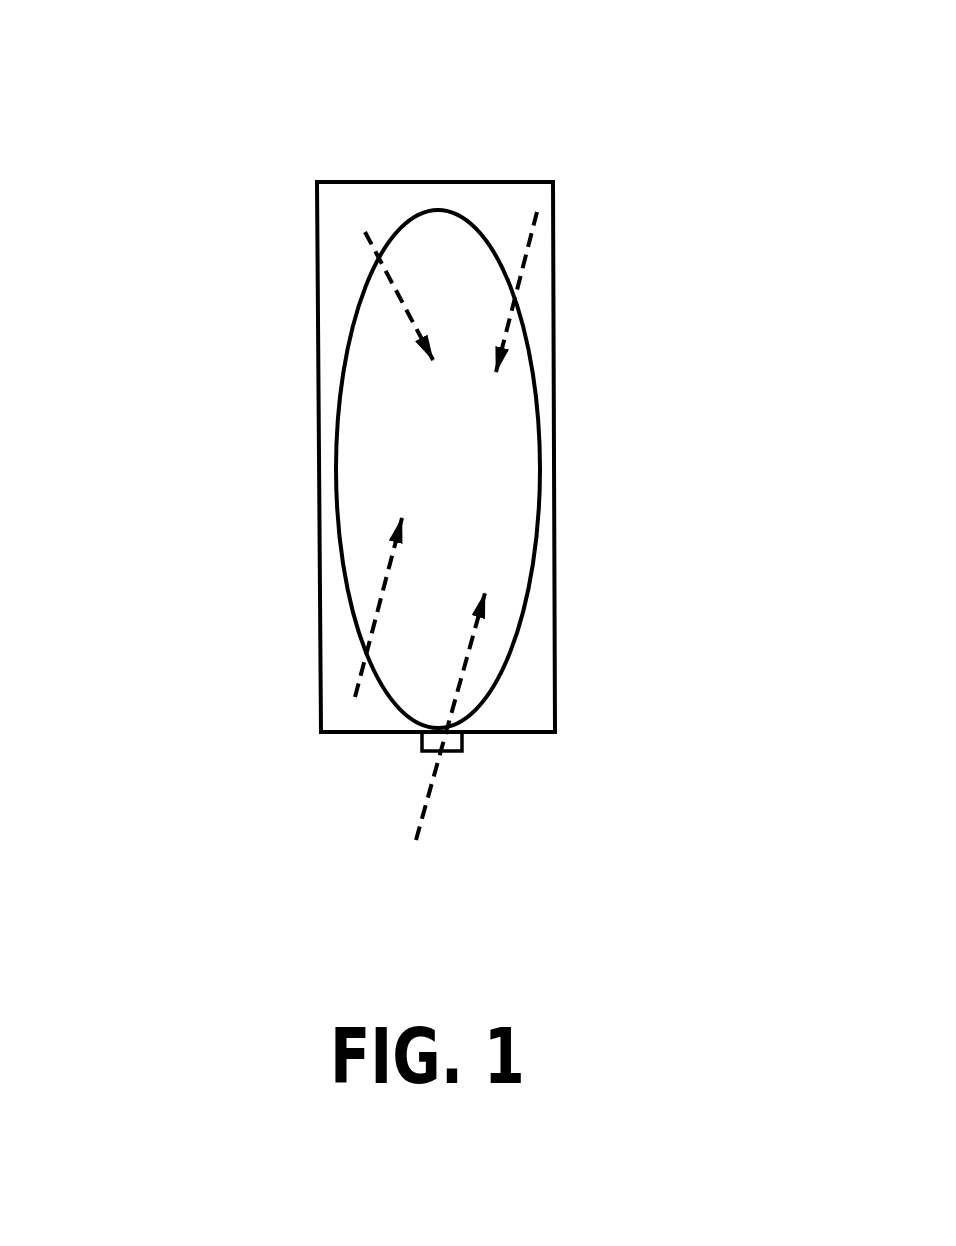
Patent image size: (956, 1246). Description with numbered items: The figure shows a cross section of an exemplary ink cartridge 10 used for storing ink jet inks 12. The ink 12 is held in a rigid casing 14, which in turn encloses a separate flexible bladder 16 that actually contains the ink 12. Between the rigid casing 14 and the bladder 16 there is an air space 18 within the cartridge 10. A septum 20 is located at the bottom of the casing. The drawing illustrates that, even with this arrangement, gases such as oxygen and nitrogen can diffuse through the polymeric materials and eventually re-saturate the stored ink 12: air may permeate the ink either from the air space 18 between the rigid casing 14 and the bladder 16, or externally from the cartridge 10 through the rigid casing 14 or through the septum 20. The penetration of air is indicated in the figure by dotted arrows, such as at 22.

The ink cartridge 10 is at (538, 122).
The ink 12 is at (472, 440).
The rigid casing 14 is at (565, 230).
The flexible bladder 16 is at (344, 343).
The air space 18 is at (362, 228).
The septum 20 is at (453, 770).
The air penetration arrows 22 is at (425, 800).